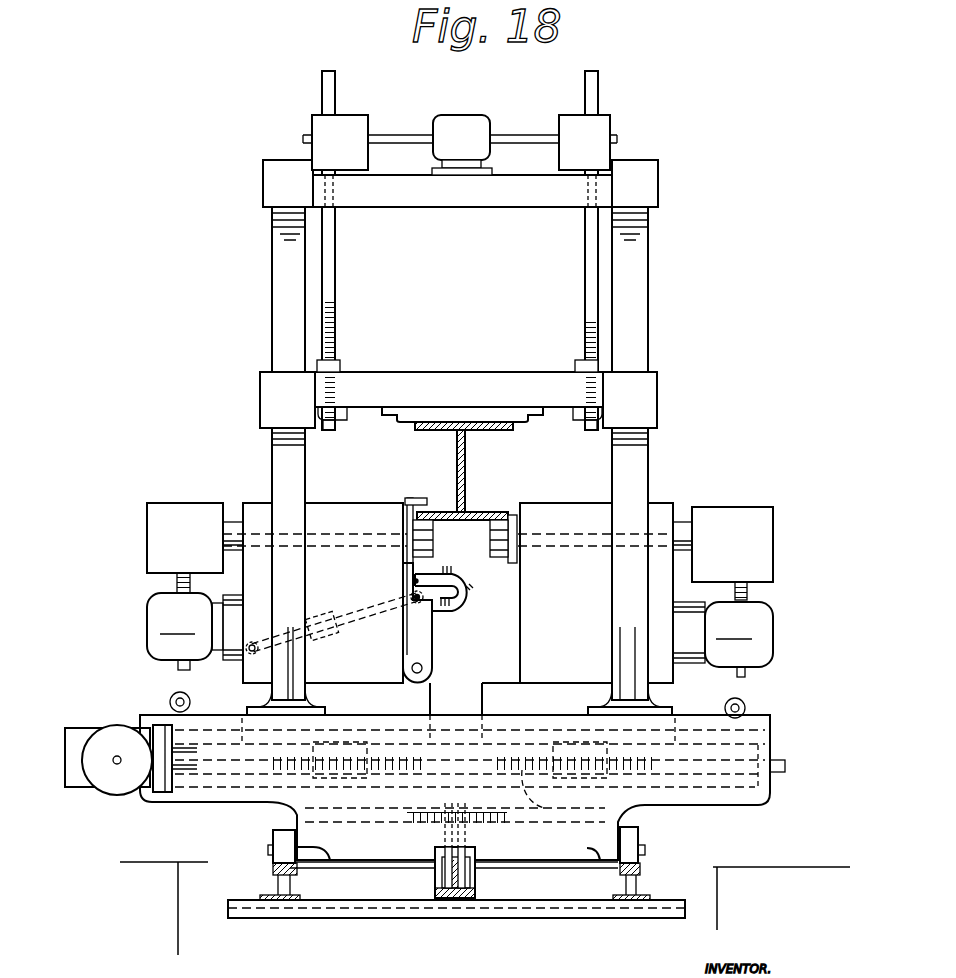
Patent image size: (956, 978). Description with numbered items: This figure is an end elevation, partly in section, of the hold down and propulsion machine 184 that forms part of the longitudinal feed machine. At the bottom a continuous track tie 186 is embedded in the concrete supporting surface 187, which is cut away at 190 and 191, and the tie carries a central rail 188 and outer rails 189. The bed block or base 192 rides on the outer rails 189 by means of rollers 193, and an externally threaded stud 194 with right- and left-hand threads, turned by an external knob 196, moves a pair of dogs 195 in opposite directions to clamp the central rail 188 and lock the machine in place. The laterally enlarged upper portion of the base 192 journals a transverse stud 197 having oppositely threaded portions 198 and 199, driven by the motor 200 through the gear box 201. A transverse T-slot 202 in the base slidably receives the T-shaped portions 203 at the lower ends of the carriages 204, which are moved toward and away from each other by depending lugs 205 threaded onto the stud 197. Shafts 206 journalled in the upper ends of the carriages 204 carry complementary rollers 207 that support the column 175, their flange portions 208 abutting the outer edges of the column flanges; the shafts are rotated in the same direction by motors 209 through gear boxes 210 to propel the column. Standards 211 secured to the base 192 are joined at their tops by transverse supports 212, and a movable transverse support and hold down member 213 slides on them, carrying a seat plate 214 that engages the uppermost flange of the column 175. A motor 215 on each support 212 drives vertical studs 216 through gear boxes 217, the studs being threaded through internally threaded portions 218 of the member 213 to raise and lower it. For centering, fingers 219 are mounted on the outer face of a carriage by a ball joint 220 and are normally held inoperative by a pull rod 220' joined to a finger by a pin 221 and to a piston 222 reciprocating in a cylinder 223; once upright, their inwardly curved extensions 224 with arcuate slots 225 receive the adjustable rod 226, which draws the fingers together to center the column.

The hold down and propulsion machine 184 is at (626, 70).
The column 175 is at (466, 455).
The continuous track tie 186 is at (460, 909).
The concrete supporting surface 187 is at (700, 880).
The central rail 188 is at (467, 857).
The outer rails 189 is at (272, 873).
The cut away portion 190 is at (295, 870).
The cut away portion 191 is at (477, 880).
The bed block or base 192 is at (748, 722).
The rollers 193 is at (272, 838).
The externally threaded stud 194 is at (447, 808).
The dogs 195 is at (435, 860).
The external knob 196 is at (312, 778).
The transverse stud 197 is at (248, 765).
The externally threaded portion 198 is at (313, 860).
The externally threaded portion 199 is at (552, 795).
The motor 200 is at (118, 796).
The gear box 201 is at (78, 788).
The transverse T-slot 202 is at (770, 745).
The T-shaped portions 203 is at (340, 742).
The carriages 204 is at (352, 513).
The depending lugs 205 is at (380, 742).
The shafts 206 is at (312, 530).
The rollers 207 is at (490, 530).
The flange portions 208 is at (410, 498).
The motors 209 is at (460, 635).
The gear boxes 210 is at (175, 515).
The columns or standards 211 is at (285, 462).
The transverse supports 212 is at (460, 207).
The movable transverse support and hold down member 213 is at (447, 383).
The seat plate 214 is at (490, 418).
The motor 215 is at (463, 116).
The vertical studs 216 is at (336, 268).
The gear boxes 217 is at (362, 125).
The internally threaded portions 218 is at (342, 362).
The fingers 219 is at (405, 638).
The ball joint 220 is at (444, 647).
The pull rod 220' is at (385, 593).
The pin 221 is at (412, 613).
The piston 222 is at (302, 628).
The cylinder 223 is at (268, 615).
The inwardly curved extension 224 is at (452, 567).
The arcuate slot 225 is at (480, 583).
The adjustable rod 226 is at (411, 578).